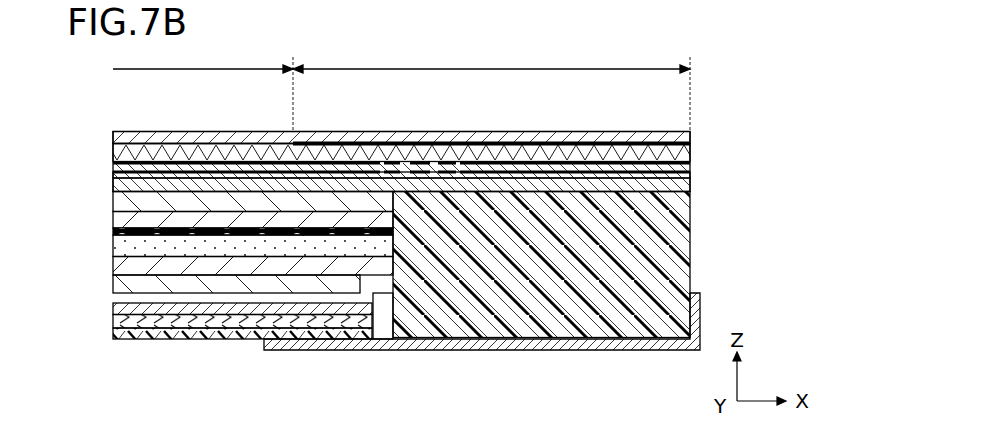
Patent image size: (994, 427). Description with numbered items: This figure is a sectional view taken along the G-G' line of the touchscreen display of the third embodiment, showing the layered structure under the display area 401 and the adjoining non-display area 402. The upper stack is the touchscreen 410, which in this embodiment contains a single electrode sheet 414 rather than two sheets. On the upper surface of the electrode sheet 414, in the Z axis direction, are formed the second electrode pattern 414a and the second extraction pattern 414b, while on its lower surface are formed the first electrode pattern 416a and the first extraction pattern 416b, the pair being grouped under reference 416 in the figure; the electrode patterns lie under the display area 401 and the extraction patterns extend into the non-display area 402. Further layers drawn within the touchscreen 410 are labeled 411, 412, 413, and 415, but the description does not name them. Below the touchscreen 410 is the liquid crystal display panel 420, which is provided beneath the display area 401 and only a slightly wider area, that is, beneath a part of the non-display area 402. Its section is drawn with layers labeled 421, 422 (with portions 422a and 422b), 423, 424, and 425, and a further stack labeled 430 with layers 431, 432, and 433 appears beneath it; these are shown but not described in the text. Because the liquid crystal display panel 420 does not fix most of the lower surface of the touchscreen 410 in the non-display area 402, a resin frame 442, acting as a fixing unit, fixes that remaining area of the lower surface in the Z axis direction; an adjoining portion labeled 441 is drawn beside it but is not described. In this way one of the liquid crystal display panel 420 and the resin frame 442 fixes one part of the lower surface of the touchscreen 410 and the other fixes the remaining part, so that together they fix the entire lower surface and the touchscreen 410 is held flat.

The display area 401 is at (203, 87).
The non-display area 402 is at (491, 87).
The touchscreen 410 is at (110, 131).
The protective layer 411 is at (692, 137).
The light shielding layer 412 is at (692, 144).
The color filter layer 413 is at (692, 155).
The electrode sheet 414 is at (692, 168).
The second electrode pattern 414a is at (205, 162).
The second extraction pattern 414b is at (376, 162).
The alignment layer 415 is at (692, 184).
The second electrode layer 416 is at (401, 132).
The first electrode pattern 416a is at (272, 172).
The first extraction pattern 416b is at (456, 172).
The liquid crystal display panel 420 is at (110, 190).
The insulating layer 421 is at (692, 206).
The electrode layer 422 is at (395, 231).
The electrode first portion 422a is at (306, 236).
The electrode second portion 422b is at (389, 236).
The active layer 423 is at (395, 255).
The substrate layer 424 is at (395, 278).
The base substrate 425 is at (250, 285).
The lower layer stack 430 is at (110, 302).
The first lower layer 431 is at (141, 310).
The second lower layer 432 is at (177, 322).
The third lower layer 433 is at (216, 334).
The sealing wall 441 is at (368, 312).
The resin frame 442 is at (436, 330).